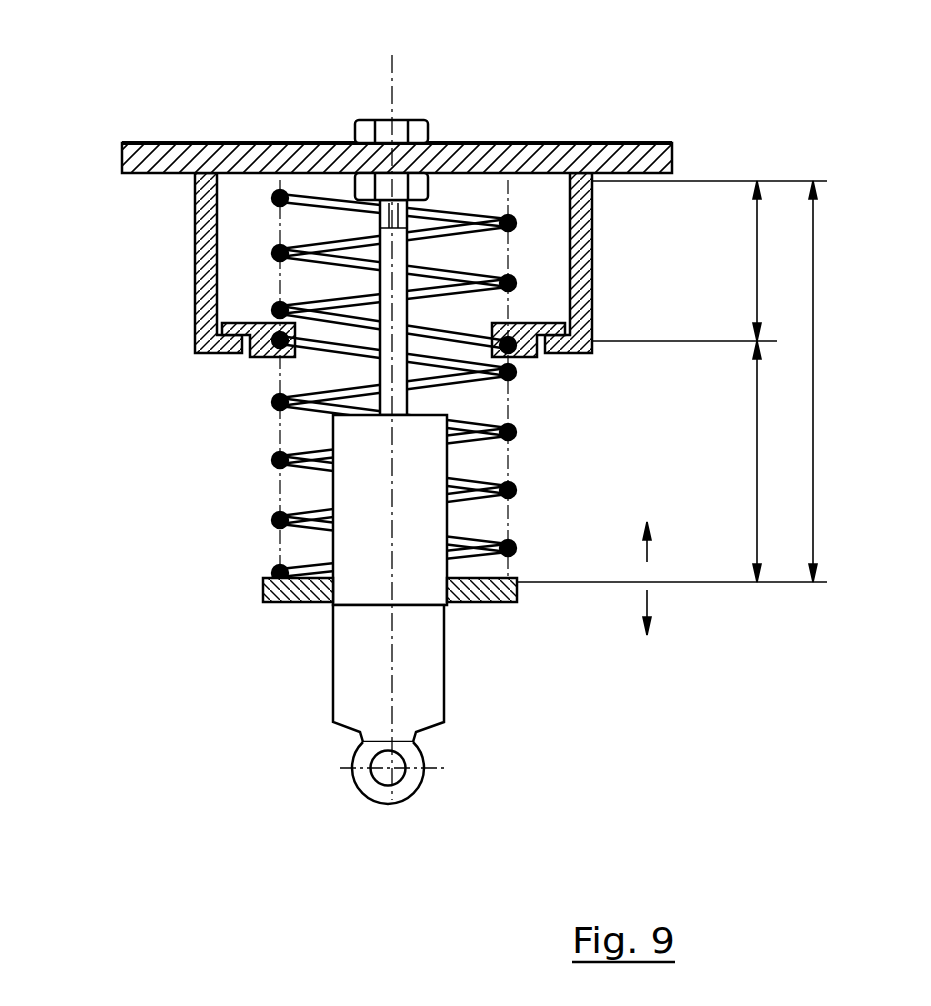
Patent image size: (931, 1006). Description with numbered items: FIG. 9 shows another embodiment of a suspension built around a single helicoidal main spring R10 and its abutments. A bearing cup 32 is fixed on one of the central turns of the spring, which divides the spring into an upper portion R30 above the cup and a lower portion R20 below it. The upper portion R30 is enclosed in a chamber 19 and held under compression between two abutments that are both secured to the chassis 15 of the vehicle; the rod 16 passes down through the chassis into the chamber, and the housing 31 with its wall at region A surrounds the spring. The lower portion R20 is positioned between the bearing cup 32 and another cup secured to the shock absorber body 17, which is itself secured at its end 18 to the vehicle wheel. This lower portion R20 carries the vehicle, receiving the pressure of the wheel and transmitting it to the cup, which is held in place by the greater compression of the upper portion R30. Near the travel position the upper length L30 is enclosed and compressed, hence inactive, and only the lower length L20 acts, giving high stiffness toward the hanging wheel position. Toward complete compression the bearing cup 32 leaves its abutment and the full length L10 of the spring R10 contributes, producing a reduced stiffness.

The chassis 15 is at (170, 143).
The piston rod 16 is at (398, 252).
The shock absorber body 17 is at (353, 646).
The end of the shock absorber body 18 is at (352, 775).
The chamber 19 is at (517, 223).
The housing cup 31 is at (217, 354).
The bearing cup 32 is at (236, 322).
The housing wall region A is at (195, 318).
The main spring R10 is at (293, 460).
The lower portion of the spring R20 is at (518, 433).
The upper portion of the spring R30 is at (593, 275).
The total length of the spring L10 is at (797, 381).
The length of the lower spring portion L20 is at (740, 461).
The length of the upper spring portion L30 is at (742, 261).